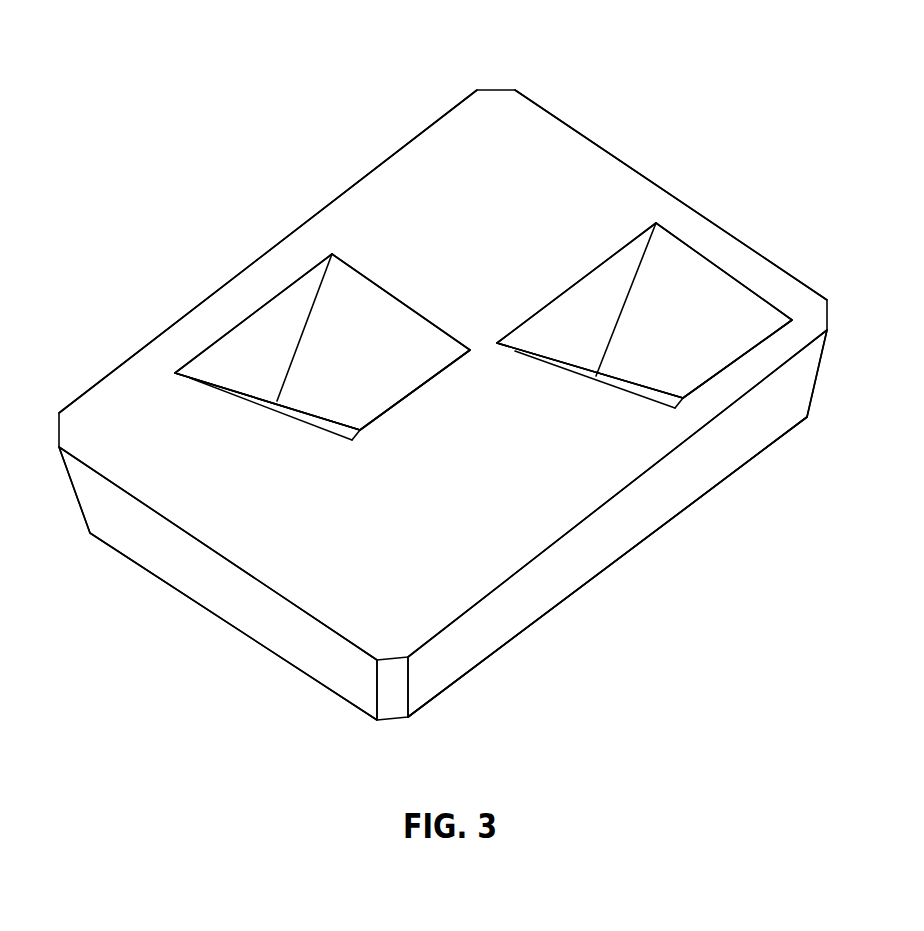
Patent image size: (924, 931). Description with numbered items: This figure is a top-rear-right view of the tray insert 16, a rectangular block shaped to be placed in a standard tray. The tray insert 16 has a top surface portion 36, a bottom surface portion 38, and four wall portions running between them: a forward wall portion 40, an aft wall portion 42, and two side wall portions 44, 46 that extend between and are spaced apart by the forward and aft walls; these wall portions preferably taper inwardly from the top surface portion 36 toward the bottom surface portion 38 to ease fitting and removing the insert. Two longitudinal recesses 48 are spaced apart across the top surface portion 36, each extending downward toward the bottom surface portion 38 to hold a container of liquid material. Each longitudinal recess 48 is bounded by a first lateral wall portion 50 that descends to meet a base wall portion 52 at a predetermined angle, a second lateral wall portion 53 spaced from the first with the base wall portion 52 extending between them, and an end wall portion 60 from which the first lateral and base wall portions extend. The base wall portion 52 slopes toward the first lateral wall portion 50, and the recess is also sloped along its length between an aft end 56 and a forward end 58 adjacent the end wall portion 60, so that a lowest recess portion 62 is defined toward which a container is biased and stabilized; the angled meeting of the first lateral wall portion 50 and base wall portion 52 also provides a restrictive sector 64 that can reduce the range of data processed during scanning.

The tray insert 16 is at (443, 381).
The top surface portion 36 is at (509, 152).
The bottom surface portion 38 is at (498, 650).
The forward wall portion 40 is at (612, 157).
The aft wall portion 42 is at (205, 582).
The side wall portion 44 is at (602, 547).
The side wall portion 46 is at (307, 223).
The longitudinal recess 48 is at (277, 402).
The first lateral wall portion 50 is at (273, 313).
The base wall portion 52 is at (344, 434).
The second lateral wall portion 53 is at (382, 418).
The aft end of the longitudinal recess 56 is at (175, 373).
The forward end of the longitudinal recess 58 is at (332, 254).
The end wall portion 60 is at (375, 318).
The lowest recess portion 62 is at (275, 399).
The restrictive sector 64 is at (297, 420).